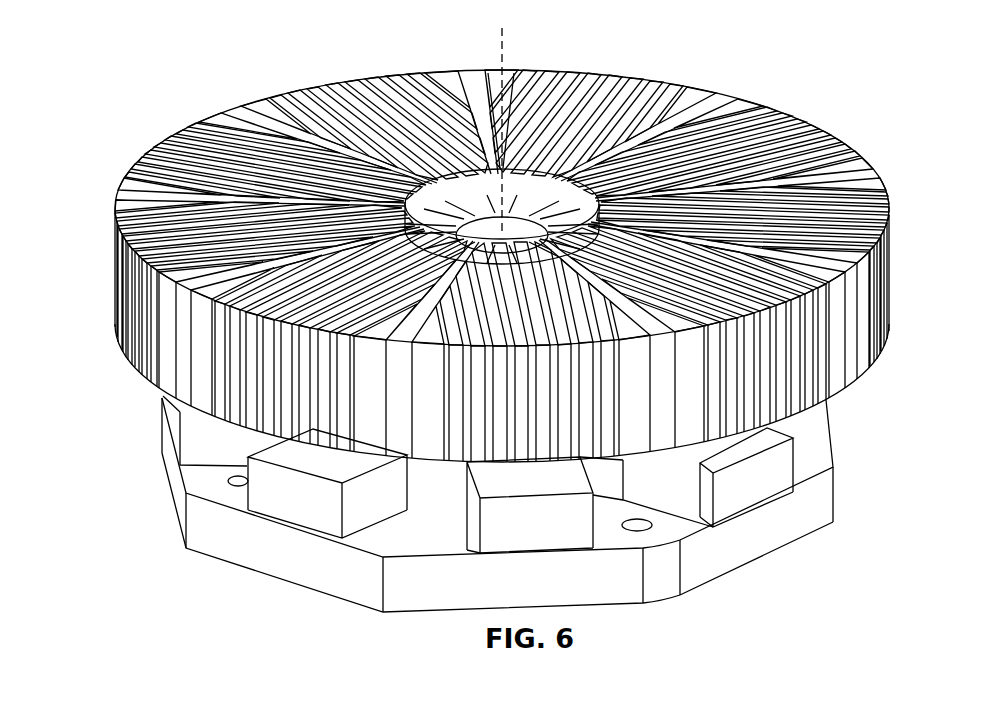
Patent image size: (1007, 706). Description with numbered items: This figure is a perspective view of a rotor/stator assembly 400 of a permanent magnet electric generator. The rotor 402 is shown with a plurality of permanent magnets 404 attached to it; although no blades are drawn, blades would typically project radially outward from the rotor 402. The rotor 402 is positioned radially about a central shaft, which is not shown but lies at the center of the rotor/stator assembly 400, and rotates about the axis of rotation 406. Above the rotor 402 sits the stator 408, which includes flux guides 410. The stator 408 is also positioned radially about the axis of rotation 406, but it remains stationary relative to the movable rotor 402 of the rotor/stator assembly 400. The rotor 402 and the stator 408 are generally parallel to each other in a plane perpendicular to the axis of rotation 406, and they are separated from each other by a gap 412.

The rotor/stator assembly 400 is at (256, 33).
The rotor 402 is at (835, 493).
The permanent magnets 404 is at (283, 500).
The axis of rotation 406 is at (503, 56).
The stator 408 is at (888, 240).
The flux guides 410 is at (808, 150).
The gap 412 is at (836, 401).